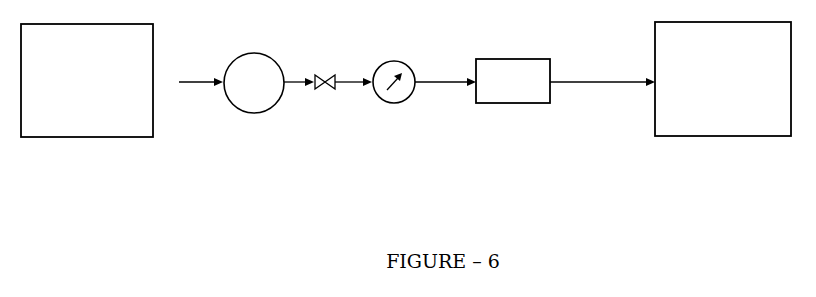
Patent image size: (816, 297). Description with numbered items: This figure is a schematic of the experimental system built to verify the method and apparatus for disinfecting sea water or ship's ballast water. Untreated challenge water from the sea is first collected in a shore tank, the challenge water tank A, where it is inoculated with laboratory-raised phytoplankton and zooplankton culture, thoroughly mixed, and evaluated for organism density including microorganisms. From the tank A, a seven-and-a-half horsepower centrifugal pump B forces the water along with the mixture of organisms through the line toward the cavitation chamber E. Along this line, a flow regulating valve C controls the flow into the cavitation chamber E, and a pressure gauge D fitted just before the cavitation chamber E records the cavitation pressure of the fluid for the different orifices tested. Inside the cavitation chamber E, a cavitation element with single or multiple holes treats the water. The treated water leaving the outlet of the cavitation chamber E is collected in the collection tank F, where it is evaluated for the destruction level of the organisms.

The challenge water tank A is at (87, 80).
The pump B is at (254, 83).
The flow regulating valve C is at (325, 93).
The pressure gauge D is at (394, 97).
The cavitation chamber E is at (513, 81).
The collection tank F is at (723, 79).